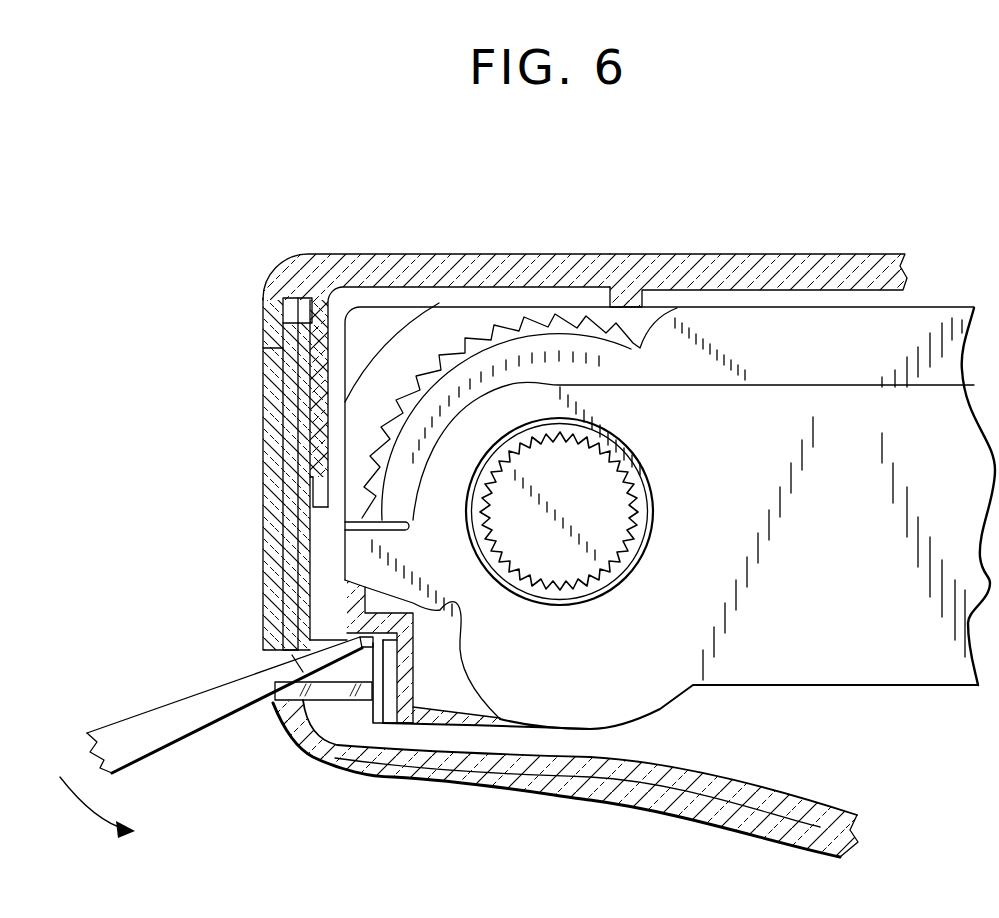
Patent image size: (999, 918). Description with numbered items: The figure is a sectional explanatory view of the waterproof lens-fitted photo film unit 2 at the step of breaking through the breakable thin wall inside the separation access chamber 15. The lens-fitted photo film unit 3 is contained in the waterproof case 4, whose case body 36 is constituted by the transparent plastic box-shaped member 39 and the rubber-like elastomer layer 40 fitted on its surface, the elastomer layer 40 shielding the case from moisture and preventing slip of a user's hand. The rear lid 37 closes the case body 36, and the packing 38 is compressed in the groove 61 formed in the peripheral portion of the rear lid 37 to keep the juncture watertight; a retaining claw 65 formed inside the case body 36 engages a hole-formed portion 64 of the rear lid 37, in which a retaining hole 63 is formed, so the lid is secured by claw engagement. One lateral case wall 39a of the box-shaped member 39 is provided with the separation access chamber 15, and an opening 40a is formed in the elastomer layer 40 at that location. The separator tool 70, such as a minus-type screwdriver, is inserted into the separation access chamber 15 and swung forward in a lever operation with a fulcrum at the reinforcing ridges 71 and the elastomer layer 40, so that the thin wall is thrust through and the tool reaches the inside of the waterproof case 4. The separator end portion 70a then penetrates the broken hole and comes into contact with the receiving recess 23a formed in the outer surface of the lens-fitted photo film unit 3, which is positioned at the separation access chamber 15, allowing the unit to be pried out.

The waterproof lens-fitted photo film unit 2 is at (672, 202).
The lens-fitted photo film unit 3 is at (934, 290).
The waterproof case 4 is at (428, 232).
The separation access chamber 15 is at (373, 680).
The receiving recess 23a is at (393, 650).
The case body 36 is at (690, 648).
The rear lid 37 is at (540, 253).
The packing 38 is at (283, 318).
The box-shaped member 39 is at (668, 768).
The lateral case wall 39a is at (293, 408).
The elastomer layer 40 is at (612, 790).
The opening 40a is at (270, 657).
The groove 61 is at (283, 306).
The retaining hole 63 is at (322, 452).
The hole-formed portion 64 is at (322, 333).
The retaining claw 65 is at (310, 468).
The separator tool 70 is at (180, 728).
The separator end portion 70a is at (278, 618).
The reinforcing ridge 71 is at (313, 700).